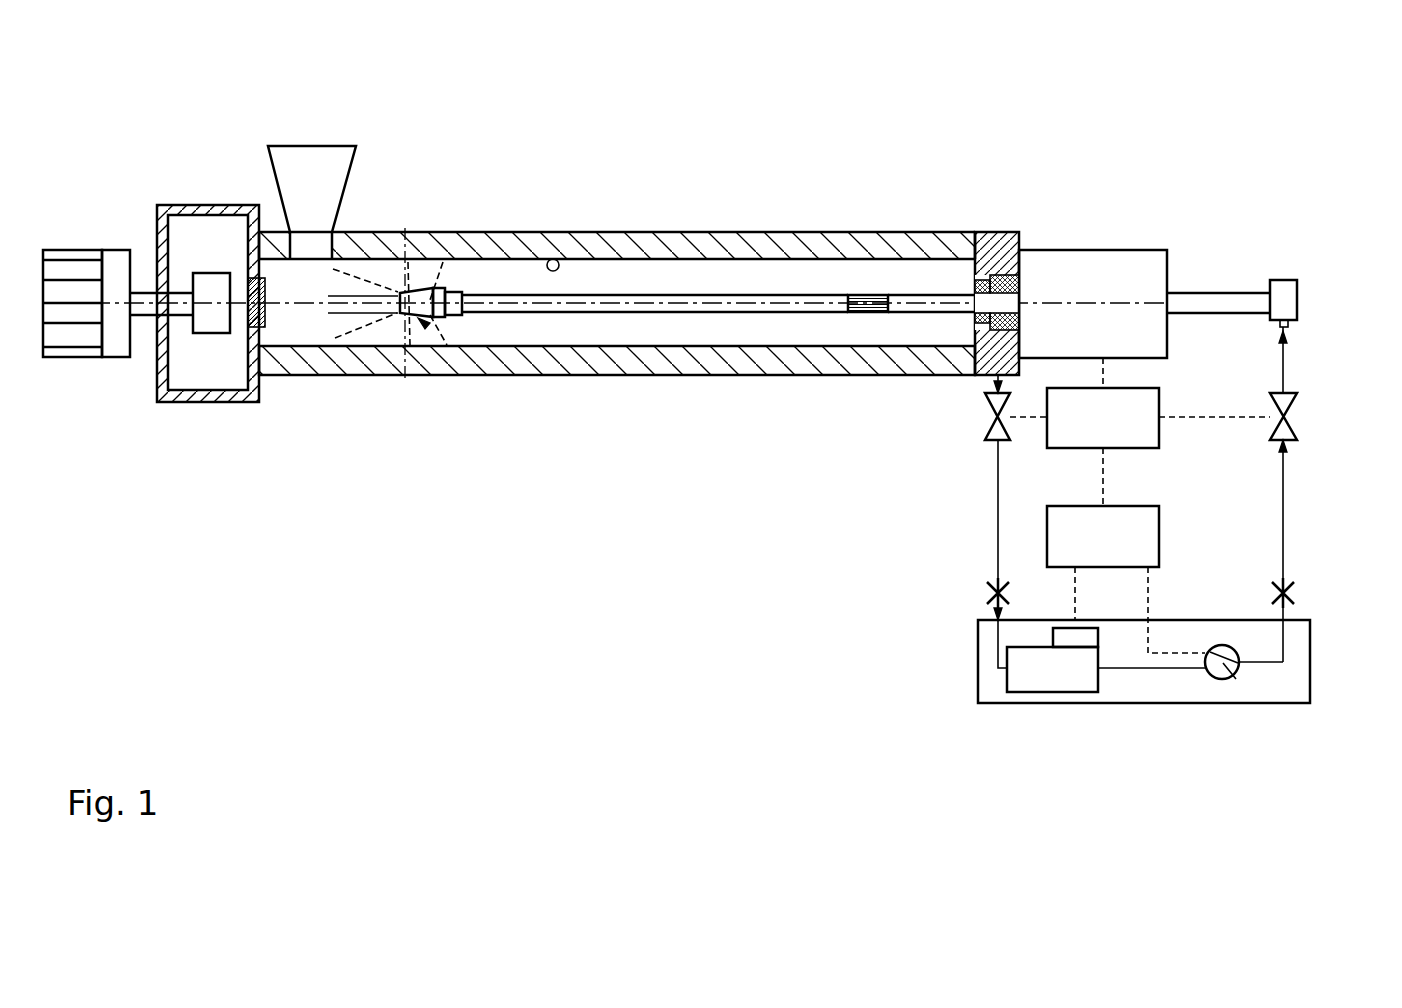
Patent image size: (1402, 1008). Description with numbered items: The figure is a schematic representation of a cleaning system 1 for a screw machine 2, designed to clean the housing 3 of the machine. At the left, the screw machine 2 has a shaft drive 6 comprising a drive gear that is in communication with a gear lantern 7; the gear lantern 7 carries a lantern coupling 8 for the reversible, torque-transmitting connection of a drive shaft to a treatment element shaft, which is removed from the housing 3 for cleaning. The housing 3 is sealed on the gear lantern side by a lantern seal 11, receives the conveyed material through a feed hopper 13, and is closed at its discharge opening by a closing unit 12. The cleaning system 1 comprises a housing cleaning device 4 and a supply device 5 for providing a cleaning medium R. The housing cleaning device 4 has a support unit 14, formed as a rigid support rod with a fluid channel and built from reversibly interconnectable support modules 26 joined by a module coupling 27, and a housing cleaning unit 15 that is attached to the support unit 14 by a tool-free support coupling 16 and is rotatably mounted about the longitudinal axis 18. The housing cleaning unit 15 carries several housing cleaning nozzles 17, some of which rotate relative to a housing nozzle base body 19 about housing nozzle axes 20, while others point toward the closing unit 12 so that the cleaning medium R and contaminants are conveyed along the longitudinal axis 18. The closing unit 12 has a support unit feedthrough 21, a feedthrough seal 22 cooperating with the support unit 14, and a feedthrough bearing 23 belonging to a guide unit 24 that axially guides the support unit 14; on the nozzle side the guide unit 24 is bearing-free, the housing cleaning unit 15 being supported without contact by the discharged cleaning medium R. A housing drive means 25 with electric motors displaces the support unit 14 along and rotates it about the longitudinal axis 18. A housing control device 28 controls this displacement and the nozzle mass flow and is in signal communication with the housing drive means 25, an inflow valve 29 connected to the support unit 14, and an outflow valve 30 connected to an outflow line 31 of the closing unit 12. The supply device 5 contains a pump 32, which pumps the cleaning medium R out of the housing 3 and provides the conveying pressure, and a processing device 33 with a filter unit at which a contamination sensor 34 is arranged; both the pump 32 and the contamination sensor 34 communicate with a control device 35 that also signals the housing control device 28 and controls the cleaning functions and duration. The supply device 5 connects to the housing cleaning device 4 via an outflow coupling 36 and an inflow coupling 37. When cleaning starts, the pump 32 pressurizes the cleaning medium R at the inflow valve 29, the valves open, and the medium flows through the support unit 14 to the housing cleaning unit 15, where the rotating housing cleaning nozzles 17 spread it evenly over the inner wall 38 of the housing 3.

The cleaning system 1 is at (791, 190).
The screw machine 2 is at (376, 224).
The housing 3 is at (483, 232).
The housing cleaning device 4 is at (1188, 262).
The supply device 5 is at (978, 656).
The shaft drive 6 is at (79, 268).
The gear lantern 7 is at (190, 205).
The lantern coupling 8 is at (214, 287).
The lantern seal 11 is at (249, 322).
The closing unit 12 is at (1003, 227).
The feed hopper 13 is at (297, 158).
The support unit 14 is at (700, 300).
The housing cleaning unit 15 is at (413, 313).
The support coupling 16 is at (463, 317).
The housing cleaning nozzles 17 is at (404, 292).
The longitudinal axis 18 is at (753, 303).
The housing nozzle base body 19 is at (421, 322).
The housing nozzle axes 20 is at (405, 363).
The support unit feedthrough 21 is at (986, 232).
The feedthrough seal 22 is at (977, 288).
The feedthrough bearing 23 is at (1022, 248).
The guide unit 24 is at (1058, 236).
The housing drive means 25 is at (1140, 262).
The support modules 26 is at (998, 383).
The module coupling 27 is at (862, 302).
The housing control device 28 is at (1062, 433).
The inflow valve 29 is at (1297, 427).
The outflow valve 30 is at (985, 432).
The outflow line 31 is at (902, 307).
The pump 32 is at (1222, 678).
The processing device 33 is at (1042, 682).
The contamination sensor 34 is at (1090, 637).
The control device 35 is at (1148, 543).
The outflow coupling 36 is at (990, 592).
The inflow coupling 37 is at (1295, 590).
The inner wall 38 is at (546, 240).
The cleaning medium R is at (447, 337).